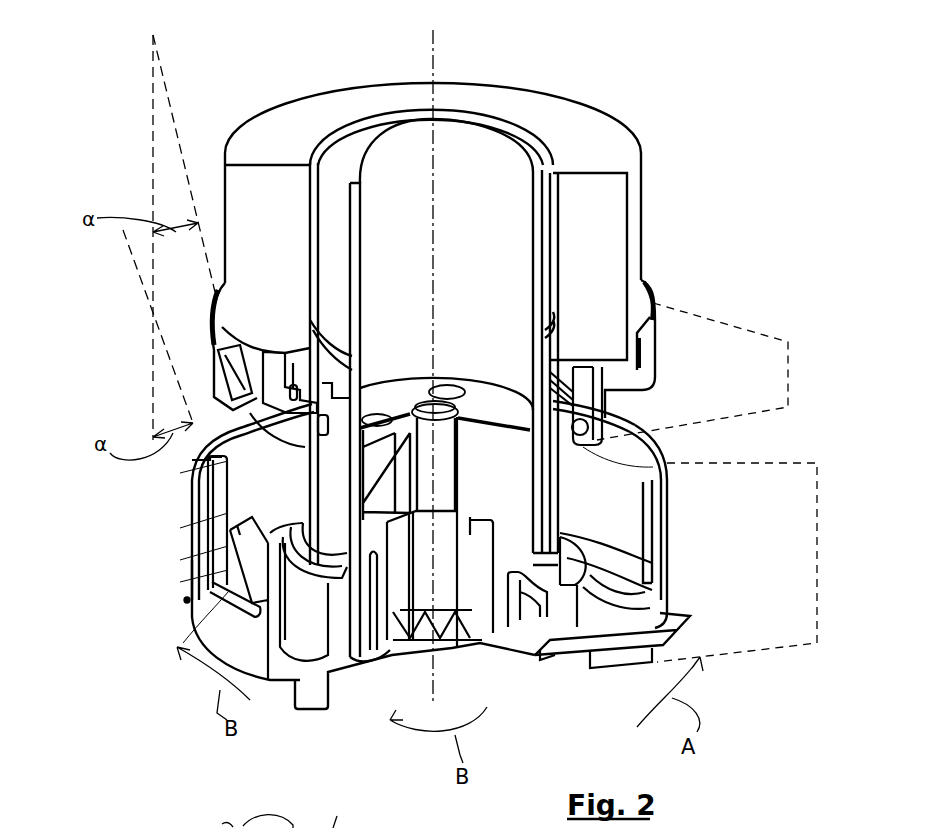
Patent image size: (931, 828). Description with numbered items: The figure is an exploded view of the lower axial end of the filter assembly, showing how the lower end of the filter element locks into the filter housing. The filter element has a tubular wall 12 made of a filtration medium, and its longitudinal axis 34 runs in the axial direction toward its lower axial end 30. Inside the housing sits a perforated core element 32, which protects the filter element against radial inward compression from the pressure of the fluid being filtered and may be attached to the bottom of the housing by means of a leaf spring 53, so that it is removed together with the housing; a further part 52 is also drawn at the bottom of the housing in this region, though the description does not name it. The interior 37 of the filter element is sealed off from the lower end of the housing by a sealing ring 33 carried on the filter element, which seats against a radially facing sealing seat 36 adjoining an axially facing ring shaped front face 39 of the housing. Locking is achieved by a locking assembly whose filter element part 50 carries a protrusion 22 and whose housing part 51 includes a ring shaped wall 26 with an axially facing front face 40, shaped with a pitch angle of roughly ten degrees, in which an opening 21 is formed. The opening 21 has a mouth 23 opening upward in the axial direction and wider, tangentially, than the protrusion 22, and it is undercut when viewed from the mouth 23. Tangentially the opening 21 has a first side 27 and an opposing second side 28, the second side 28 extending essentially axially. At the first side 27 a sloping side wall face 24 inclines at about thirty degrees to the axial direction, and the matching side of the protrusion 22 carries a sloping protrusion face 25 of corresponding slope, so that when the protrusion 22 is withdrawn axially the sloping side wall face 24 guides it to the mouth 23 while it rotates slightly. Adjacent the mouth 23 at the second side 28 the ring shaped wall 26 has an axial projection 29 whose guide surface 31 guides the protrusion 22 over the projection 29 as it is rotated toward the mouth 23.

The tubular wall 12 is at (634, 196).
The opening 21 is at (268, 598).
The protrusion 22 is at (215, 365).
The mouth 23 is at (220, 545).
The sloping side wall face 24 is at (215, 650).
The sloping protrusion face 25 is at (222, 392).
The ring shaped wall 26 is at (661, 508).
The first side 27 is at (235, 523).
The second side 28 is at (236, 560).
The axial projection 29 is at (195, 473).
The lower axial end 30 is at (627, 470).
The guide surface 31 is at (197, 453).
The core element 32 is at (537, 234).
The sealing ring 33 is at (582, 425).
The longitudinal axis 34 is at (438, 48).
The sealing seat 36 is at (607, 587).
The interior 37 is at (487, 168).
The ring shaped front face 39 is at (597, 557).
The front face 40 is at (673, 477).
The filter element part of the locking assembly 50 is at (790, 373).
The housing part of the locking assembly 51 is at (820, 533).
The foot 52 is at (653, 613).
The leaf spring 53 is at (680, 635).